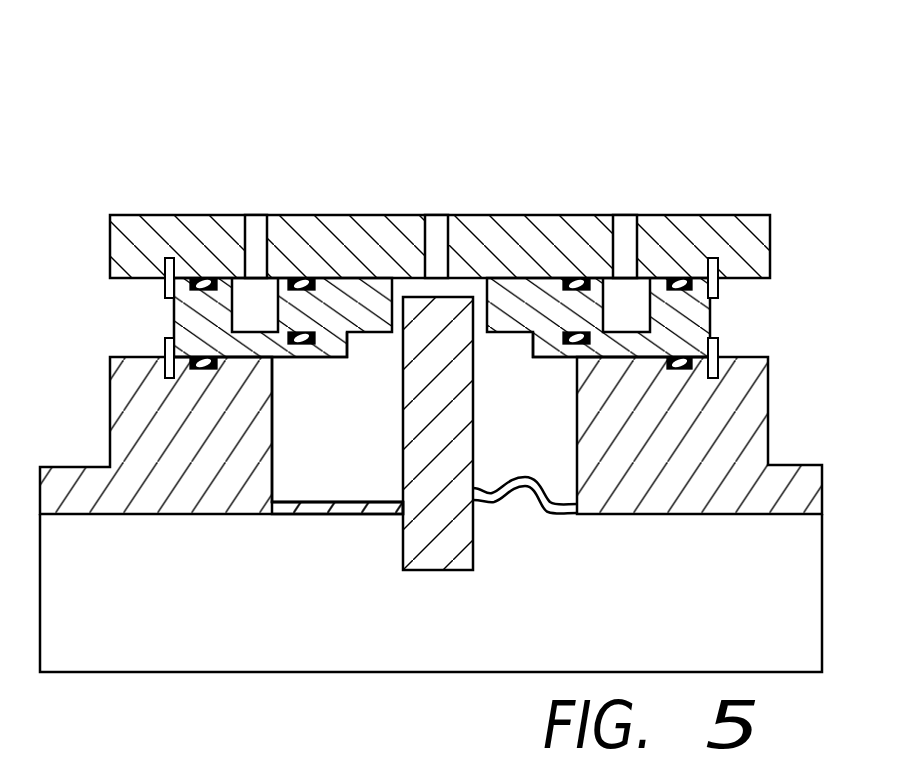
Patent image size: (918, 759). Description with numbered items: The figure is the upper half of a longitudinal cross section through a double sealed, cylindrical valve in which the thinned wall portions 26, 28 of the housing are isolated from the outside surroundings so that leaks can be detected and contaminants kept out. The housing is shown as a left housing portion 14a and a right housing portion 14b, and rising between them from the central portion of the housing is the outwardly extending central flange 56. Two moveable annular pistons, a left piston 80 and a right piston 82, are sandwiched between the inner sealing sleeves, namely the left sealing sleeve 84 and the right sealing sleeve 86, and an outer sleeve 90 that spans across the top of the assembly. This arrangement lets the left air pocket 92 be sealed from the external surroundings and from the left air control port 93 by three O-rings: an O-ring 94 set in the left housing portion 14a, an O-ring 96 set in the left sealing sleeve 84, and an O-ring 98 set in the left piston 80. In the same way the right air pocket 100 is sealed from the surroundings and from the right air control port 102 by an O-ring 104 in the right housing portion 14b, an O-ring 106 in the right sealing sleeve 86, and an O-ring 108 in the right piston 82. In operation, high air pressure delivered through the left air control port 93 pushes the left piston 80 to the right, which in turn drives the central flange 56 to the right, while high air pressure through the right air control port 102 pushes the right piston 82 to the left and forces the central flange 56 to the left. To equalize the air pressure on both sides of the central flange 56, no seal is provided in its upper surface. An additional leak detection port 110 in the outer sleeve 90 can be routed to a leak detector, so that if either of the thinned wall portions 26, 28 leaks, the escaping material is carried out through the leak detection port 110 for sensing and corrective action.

The left housing portion 14a is at (97, 514).
The right housing portion 14b is at (702, 514).
The thinned wall portion 26 is at (342, 514).
The thinned wall portion 28 is at (482, 503).
The central flange 56 is at (400, 416).
The left piston 80 is at (373, 297).
The right piston 82 is at (515, 300).
The left sealing sleeve 84 is at (262, 347).
The right sealing sleeve 86 is at (543, 341).
The outer sleeve 90 is at (170, 215).
The left air pocket 92 is at (310, 470).
The left air control port 93 is at (258, 237).
The O-ring 94 is at (207, 365).
The O-ring 96 is at (317, 343).
The O-ring 98 is at (300, 288).
The right air pocket 100 is at (552, 467).
The right air control port 102 is at (627, 225).
The O-ring 104 is at (692, 368).
The O-ring 106 is at (570, 353).
The O-ring 108 is at (577, 283).
The leak detection port 110 is at (440, 215).